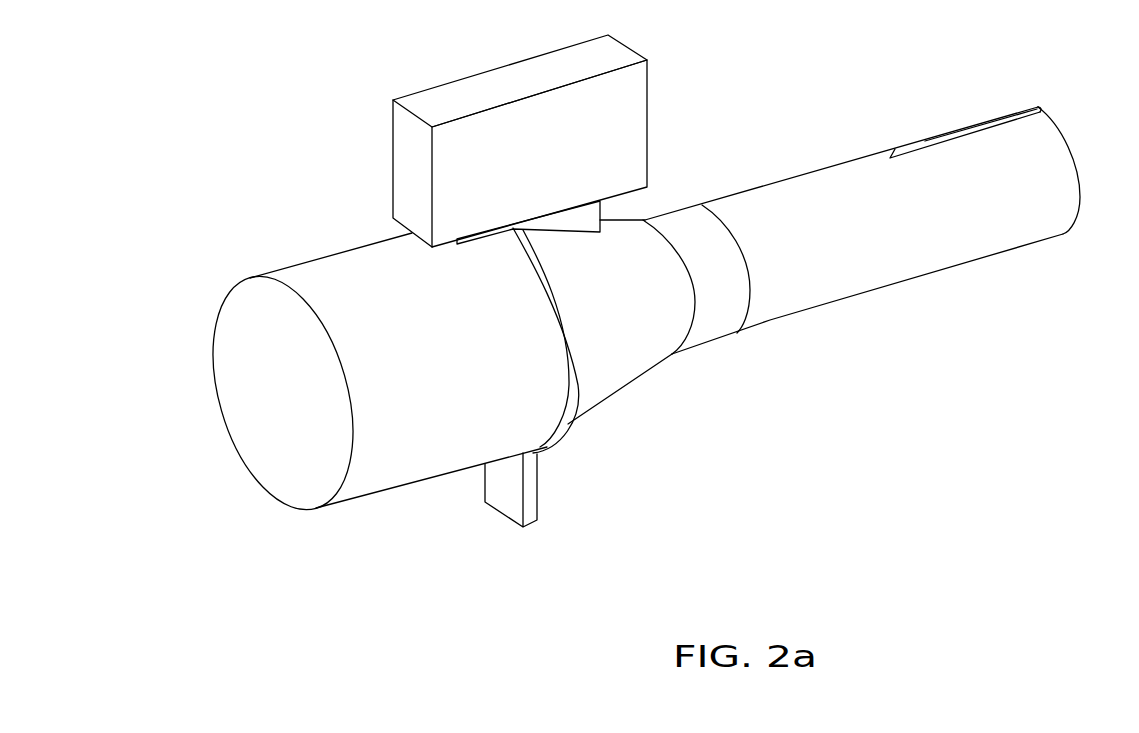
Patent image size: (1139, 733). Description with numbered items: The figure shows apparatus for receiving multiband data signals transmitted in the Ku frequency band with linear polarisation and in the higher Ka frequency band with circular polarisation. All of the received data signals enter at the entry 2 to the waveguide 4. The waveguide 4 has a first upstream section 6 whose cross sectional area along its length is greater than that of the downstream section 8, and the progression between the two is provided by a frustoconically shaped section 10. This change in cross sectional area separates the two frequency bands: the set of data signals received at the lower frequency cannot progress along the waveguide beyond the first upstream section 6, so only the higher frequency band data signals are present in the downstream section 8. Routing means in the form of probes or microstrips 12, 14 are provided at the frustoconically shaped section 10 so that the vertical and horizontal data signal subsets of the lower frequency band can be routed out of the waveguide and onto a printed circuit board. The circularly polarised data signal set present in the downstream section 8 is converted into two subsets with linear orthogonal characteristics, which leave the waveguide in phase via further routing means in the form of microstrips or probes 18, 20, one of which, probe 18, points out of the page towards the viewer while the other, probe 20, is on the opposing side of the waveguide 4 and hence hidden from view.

The entry 2 is at (263, 458).
The waveguide 4 is at (654, 288).
The first upstream section 6 is at (430, 463).
The downstream section 8 is at (885, 255).
The frustoconically shaped section 10 is at (638, 360).
The probe 12 is at (535, 501).
The probe 14 is at (595, 212).
The probe 18 is at (1007, 112).
The probe 20 is at (1063, 234).